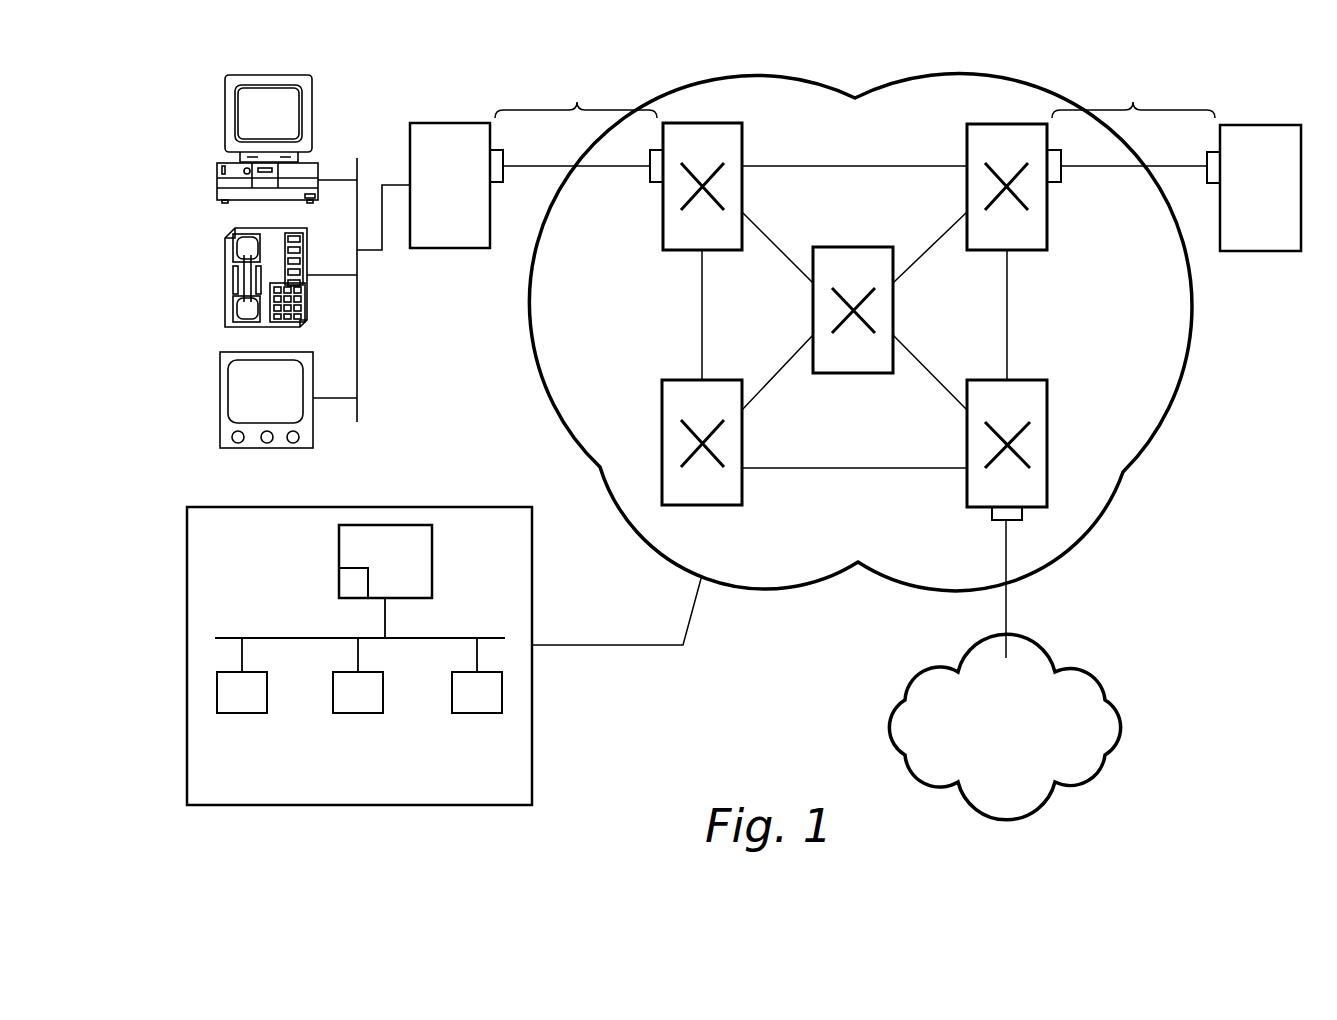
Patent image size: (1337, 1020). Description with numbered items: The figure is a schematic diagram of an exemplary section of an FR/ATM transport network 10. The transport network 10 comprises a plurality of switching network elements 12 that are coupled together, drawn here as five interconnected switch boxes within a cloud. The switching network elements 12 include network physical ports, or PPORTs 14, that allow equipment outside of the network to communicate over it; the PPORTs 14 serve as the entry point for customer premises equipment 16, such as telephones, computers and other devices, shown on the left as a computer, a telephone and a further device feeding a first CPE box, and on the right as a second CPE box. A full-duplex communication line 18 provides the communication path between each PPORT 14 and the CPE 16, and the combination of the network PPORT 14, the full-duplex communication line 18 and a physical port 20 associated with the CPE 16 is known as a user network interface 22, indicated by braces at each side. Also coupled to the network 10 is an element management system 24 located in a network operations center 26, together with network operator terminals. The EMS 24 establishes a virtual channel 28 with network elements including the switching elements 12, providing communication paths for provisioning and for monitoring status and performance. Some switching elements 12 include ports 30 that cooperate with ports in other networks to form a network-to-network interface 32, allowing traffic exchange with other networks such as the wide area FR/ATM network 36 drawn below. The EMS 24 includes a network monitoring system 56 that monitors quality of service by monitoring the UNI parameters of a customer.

The FR/ATM transport network 10 is at (1172, 410).
The switching network element 12 is at (742, 147).
The network physical port 14 is at (650, 178).
The customer premises equipment 16 is at (225, 112).
The full-duplex communication line 18 is at (553, 166).
The physical port 20 is at (498, 182).
The user network interface 22 is at (855, 95).
The element management system 24 is at (432, 560).
The network operations center 26 is at (398, 642).
The virtual channel 28 is at (692, 624).
The port 30 is at (990, 514).
The network-to-network interface 32 is at (1006, 622).
The wide area FR/ATM network 36 is at (1100, 680).
The network monitoring system 56 is at (345, 578).